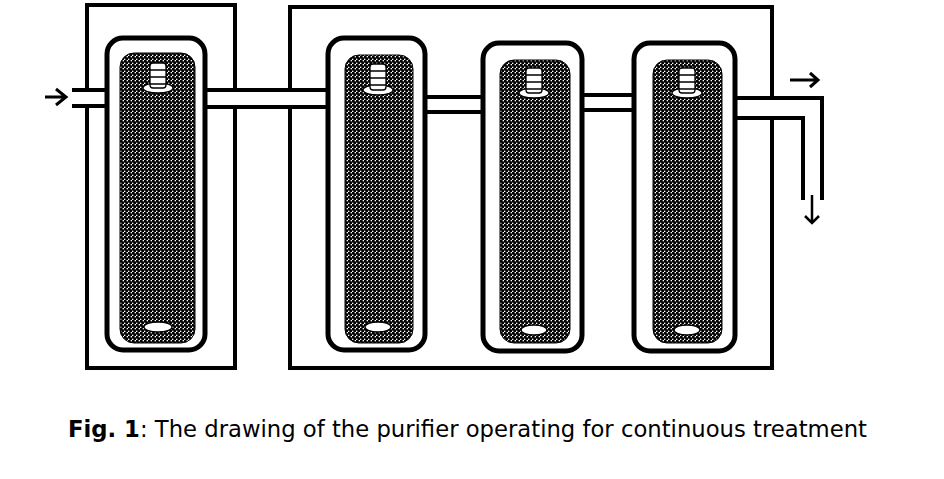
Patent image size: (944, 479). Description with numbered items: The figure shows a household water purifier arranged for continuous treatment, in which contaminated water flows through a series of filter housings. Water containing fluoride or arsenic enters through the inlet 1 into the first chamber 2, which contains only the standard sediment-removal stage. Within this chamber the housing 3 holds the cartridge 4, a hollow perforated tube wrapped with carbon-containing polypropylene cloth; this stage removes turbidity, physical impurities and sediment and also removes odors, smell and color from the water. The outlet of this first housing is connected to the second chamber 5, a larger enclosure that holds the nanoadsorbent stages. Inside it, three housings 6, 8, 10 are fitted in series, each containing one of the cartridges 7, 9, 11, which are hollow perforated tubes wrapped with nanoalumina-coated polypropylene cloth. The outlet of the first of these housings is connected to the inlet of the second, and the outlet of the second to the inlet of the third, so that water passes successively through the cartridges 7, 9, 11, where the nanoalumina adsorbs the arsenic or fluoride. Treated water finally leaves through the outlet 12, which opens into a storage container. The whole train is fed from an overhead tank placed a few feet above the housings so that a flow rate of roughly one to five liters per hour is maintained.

The inlet 1 is at (67, 103).
The first chamber 2 is at (161, 186).
The housing 3 is at (156, 181).
The cartridge 4 is at (157, 198).
The second housing 5 is at (531, 187).
The housing 6 is at (376, 180).
The cartridge 7 is at (379, 199).
The housing 8 is at (532, 181).
The cartridge 9 is at (535, 201).
The housing 10 is at (684, 181).
The cartridge 11 is at (683, 201).
The outlet 12 is at (799, 148).